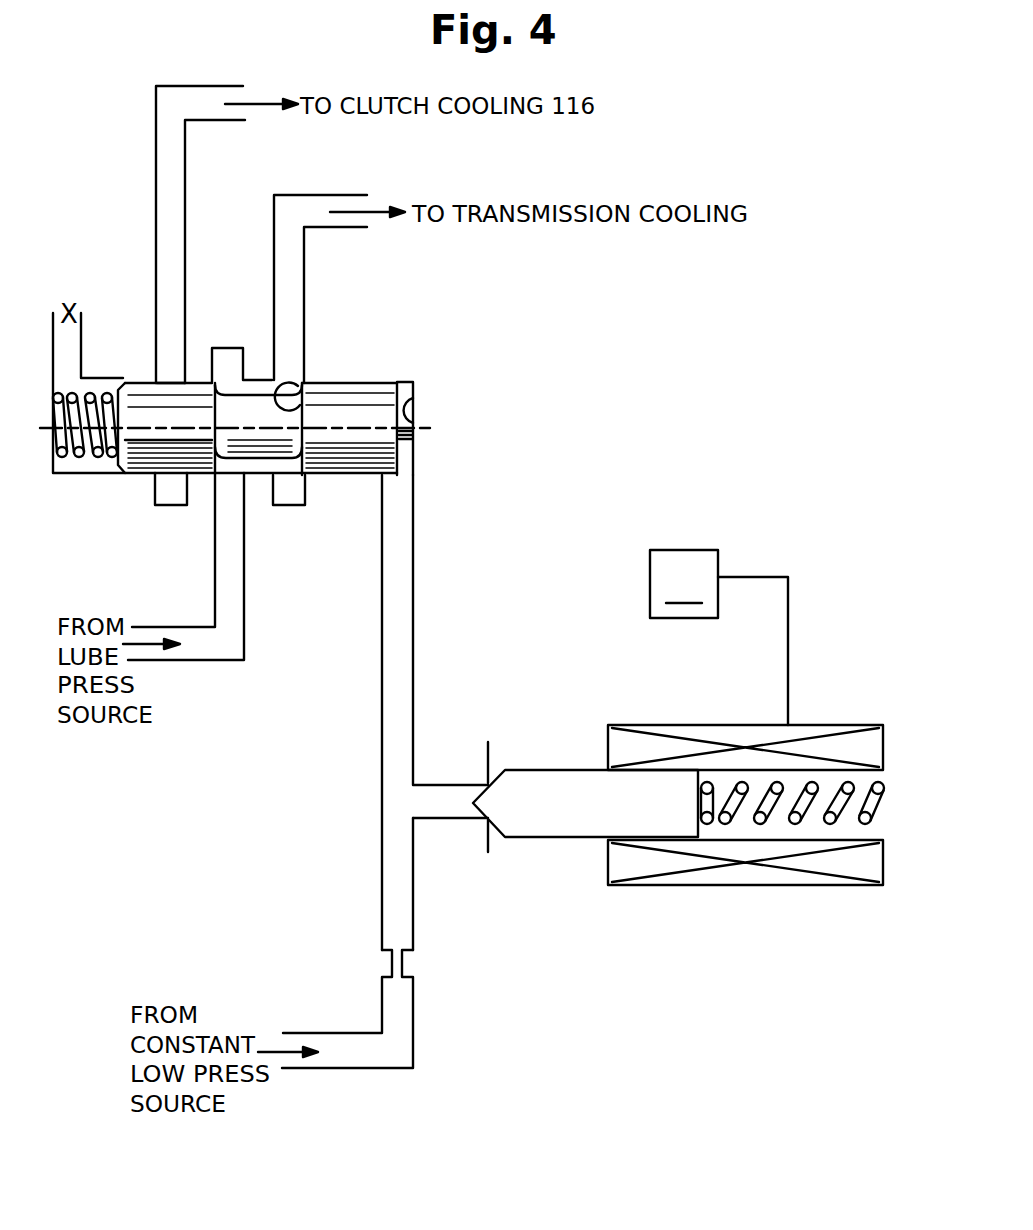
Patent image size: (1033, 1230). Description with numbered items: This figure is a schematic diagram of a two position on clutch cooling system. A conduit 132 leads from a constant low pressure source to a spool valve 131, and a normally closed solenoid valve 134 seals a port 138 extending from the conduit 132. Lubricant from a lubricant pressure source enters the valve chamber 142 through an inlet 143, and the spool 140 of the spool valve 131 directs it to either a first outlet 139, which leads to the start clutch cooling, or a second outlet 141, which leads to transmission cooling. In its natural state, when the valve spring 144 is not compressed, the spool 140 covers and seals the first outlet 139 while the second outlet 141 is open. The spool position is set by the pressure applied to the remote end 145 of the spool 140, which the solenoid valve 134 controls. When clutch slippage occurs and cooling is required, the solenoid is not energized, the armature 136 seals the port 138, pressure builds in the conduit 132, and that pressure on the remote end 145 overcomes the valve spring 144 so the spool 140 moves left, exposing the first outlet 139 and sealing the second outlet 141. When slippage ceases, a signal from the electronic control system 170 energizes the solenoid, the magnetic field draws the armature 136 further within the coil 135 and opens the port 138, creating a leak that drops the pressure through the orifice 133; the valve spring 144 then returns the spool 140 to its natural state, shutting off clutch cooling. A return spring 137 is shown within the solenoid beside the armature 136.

The spool valve 131 is at (375, 382).
The conduit 132 is at (413, 580).
The orifice 133 is at (358, 935).
The solenoid valve 134 is at (658, 880).
The coil 135 is at (688, 733).
The armature 136 is at (548, 785).
The spring 137 is at (800, 820).
The port 138 is at (457, 807).
The first outlet 139 is at (168, 382).
The spool 140 is at (148, 455).
The second outlet 141 is at (312, 405).
The valve chamber 142 is at (270, 437).
The inlet 143 is at (213, 443).
The valve spring 144 is at (96, 425).
The remote end 145 is at (413, 398).
The electronic control system 170 is at (719, 637).